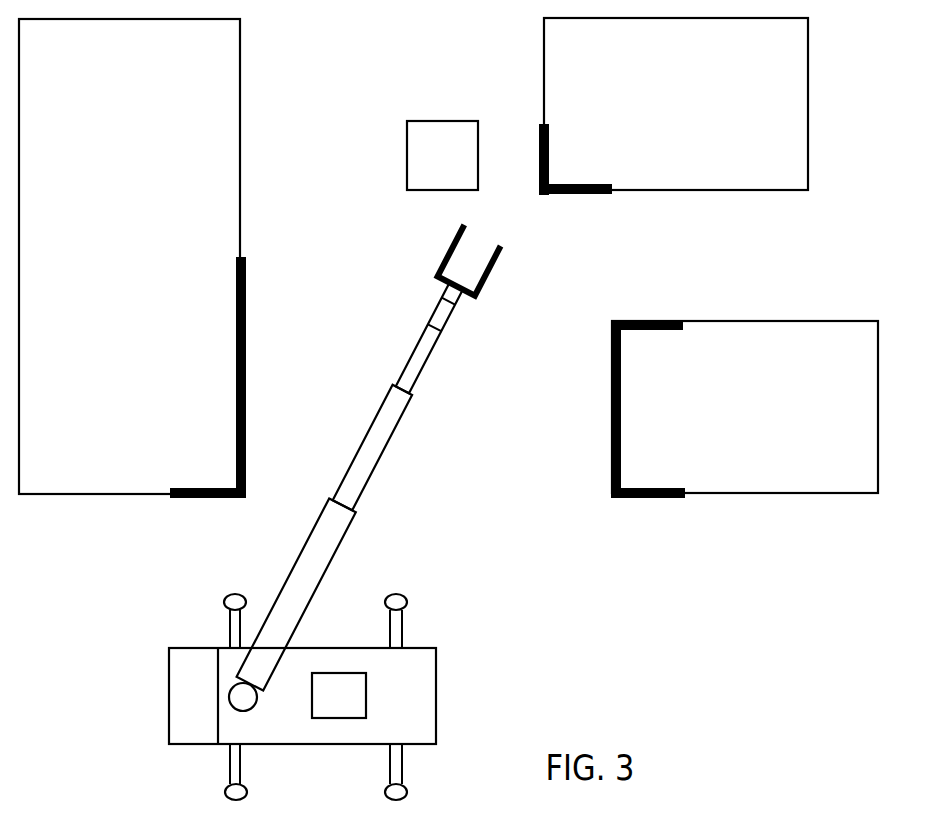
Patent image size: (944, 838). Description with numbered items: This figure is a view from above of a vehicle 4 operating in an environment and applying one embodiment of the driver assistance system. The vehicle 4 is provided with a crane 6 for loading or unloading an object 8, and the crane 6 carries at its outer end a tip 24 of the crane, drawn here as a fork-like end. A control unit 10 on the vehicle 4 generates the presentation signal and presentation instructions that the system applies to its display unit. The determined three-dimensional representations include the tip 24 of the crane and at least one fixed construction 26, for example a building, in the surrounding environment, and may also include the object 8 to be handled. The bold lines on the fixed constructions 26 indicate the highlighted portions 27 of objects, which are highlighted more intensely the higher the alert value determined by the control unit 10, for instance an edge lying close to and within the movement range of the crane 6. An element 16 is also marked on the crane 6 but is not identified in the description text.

The vehicle 4 is at (165, 583).
The crane 6 is at (452, 488).
The object 8 is at (442, 155).
The control unit 10 is at (339, 695).
The sensor 16 is at (440, 317).
The tip of the crane 24 is at (450, 297).
The fixed construction 26 is at (448, 256).
The highlighted portions 27 is at (247, 367).